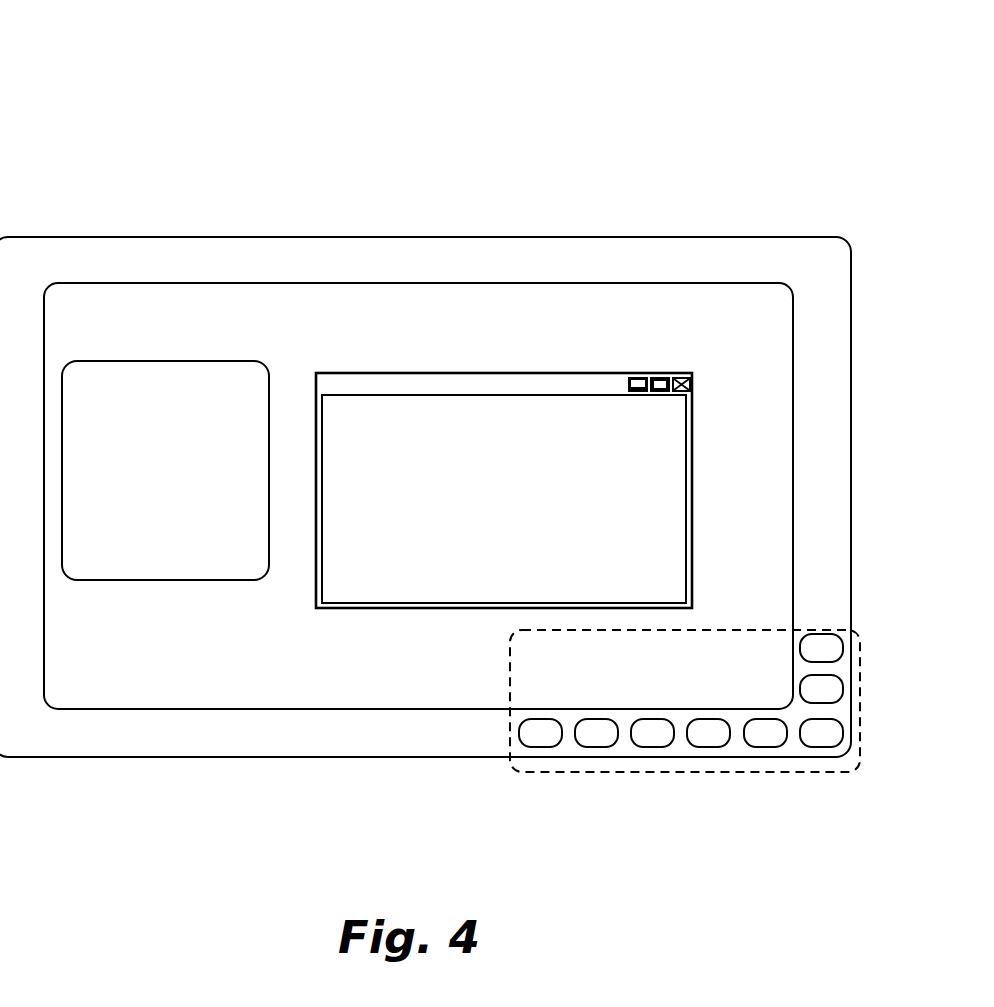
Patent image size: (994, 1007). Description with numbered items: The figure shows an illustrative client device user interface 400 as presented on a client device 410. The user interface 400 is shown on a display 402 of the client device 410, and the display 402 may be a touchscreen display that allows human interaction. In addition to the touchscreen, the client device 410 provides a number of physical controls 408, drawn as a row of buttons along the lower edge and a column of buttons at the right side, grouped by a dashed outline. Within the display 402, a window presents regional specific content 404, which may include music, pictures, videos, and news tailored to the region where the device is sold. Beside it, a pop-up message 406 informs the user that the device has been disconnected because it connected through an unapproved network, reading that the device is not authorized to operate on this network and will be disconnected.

The user interface 400 is at (165, 146).
The display 402 is at (396, 305).
The regional specific content 404 is at (165, 470).
The pop-up message 406 is at (575, 373).
The physical controls 408 is at (740, 772).
The client device 410 is at (761, 236).